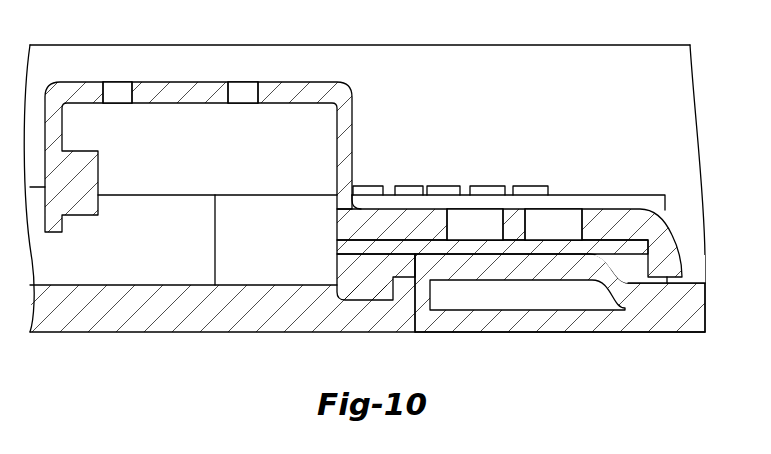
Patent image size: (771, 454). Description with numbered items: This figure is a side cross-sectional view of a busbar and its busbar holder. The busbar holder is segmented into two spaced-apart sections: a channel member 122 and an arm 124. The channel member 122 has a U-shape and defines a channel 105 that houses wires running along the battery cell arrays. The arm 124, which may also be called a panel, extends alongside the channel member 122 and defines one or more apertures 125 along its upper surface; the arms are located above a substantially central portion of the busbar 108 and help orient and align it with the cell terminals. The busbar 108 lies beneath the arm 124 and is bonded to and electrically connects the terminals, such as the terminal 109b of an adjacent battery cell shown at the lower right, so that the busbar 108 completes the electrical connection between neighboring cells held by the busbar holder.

The channel member 122 is at (180, 93).
The channel 105 is at (191, 150).
The apertures 125 is at (447, 225).
The arm 124 is at (603, 210).
The busbar 108 is at (543, 248).
The terminal 109b is at (668, 302).